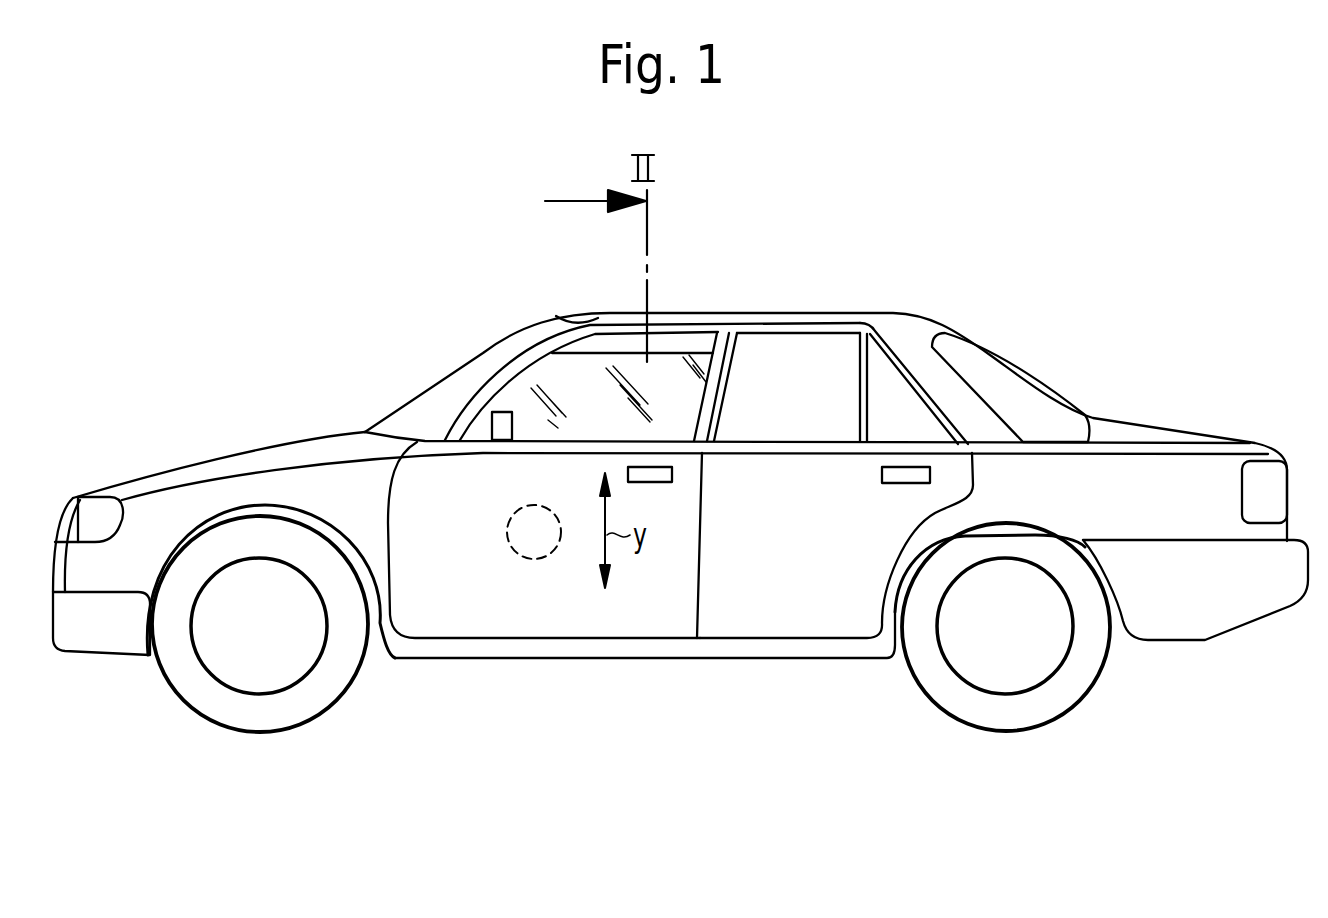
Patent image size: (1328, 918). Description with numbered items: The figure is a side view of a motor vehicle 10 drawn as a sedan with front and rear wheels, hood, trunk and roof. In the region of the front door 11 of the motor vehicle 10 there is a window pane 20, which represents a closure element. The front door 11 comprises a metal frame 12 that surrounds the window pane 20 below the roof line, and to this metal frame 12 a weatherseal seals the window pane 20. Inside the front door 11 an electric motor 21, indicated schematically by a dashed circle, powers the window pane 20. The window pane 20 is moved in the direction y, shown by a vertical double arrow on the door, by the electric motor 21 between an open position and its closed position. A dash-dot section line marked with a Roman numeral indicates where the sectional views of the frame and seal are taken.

The motor vehicle 10 is at (858, 285).
The front door 11 is at (558, 623).
The metal frame 12 is at (693, 325).
The window pane 20 is at (563, 372).
The electric motor 21 is at (508, 538).